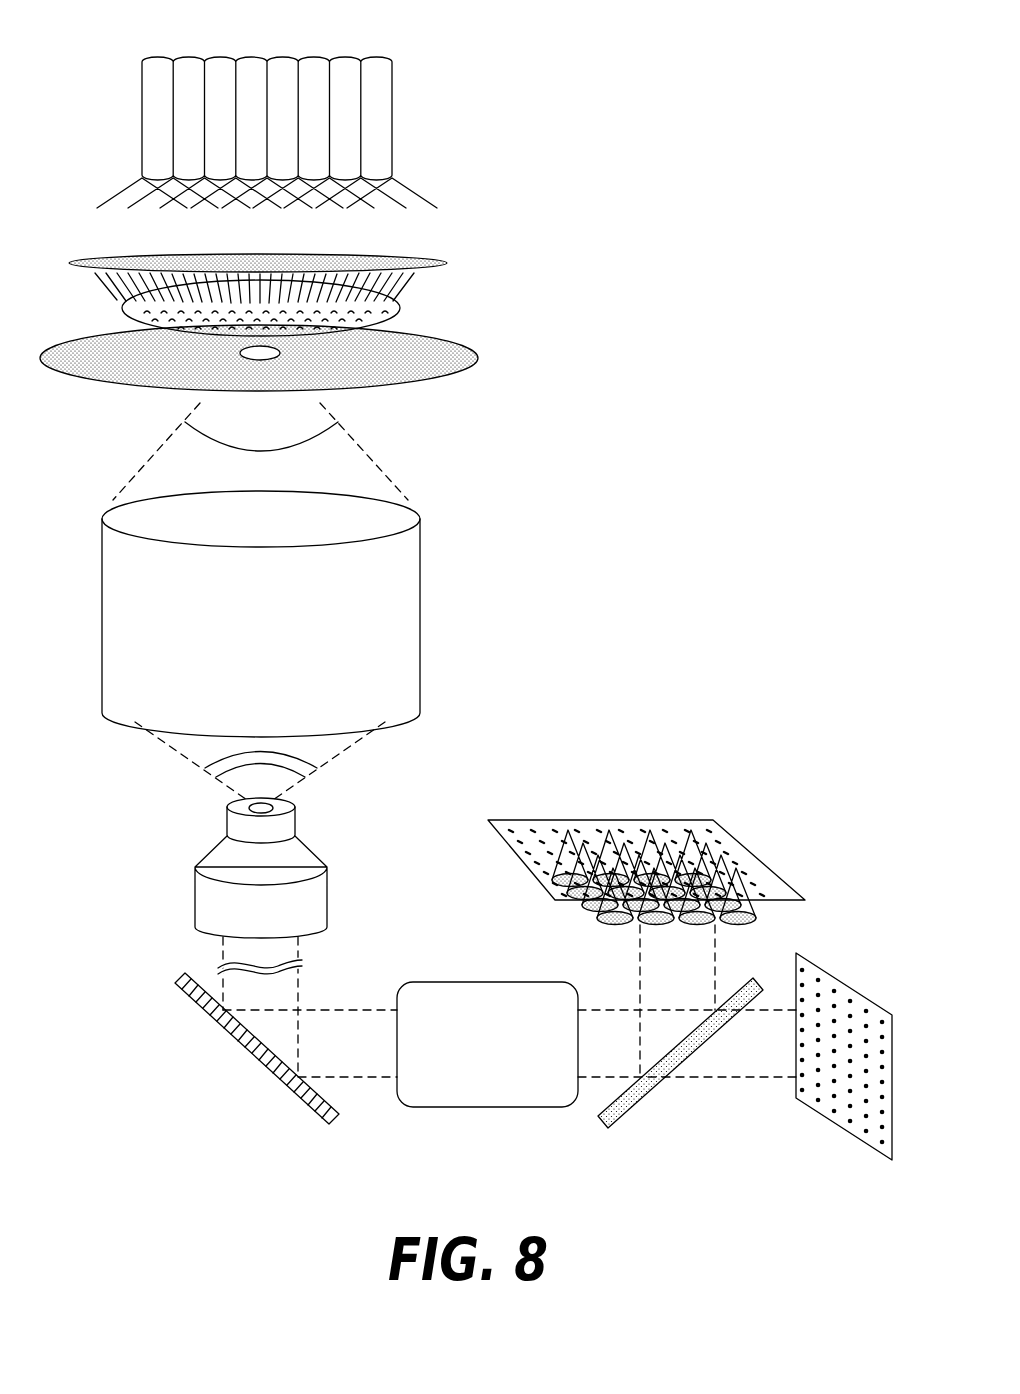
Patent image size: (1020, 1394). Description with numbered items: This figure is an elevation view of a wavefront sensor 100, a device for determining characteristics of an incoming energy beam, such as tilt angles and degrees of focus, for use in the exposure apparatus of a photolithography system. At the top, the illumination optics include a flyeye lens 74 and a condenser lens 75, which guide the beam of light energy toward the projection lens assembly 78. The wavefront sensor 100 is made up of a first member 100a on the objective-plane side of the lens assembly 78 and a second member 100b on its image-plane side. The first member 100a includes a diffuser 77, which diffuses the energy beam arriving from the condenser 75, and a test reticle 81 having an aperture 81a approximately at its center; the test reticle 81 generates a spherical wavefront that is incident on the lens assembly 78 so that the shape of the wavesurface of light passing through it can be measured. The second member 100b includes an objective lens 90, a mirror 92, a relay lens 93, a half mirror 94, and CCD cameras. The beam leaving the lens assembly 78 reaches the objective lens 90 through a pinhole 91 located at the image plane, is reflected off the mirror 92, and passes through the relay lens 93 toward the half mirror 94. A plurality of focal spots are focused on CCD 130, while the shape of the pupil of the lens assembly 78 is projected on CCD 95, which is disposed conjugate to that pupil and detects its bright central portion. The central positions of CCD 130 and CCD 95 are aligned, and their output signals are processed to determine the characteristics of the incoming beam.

The flyeye lens 74 is at (373, 62).
The wavefront sensor 100 is at (580, 71).
The condenser lens 75 is at (445, 266).
The first member 100a is at (560, 308).
The diffuser 77 is at (398, 312).
The test reticle 81 is at (304, 376).
The aperture 81a is at (270, 356).
The lens assembly 78 is at (420, 620).
The pinhole 91 is at (232, 807).
The objective lens 90 is at (216, 863).
The CCD 130 is at (720, 836).
The CCD 95 is at (847, 995).
The relay lens 93 is at (506, 1058).
The mirror 92 is at (242, 1051).
The half mirror 94 is at (643, 1097).
The second member 100b is at (522, 1128).